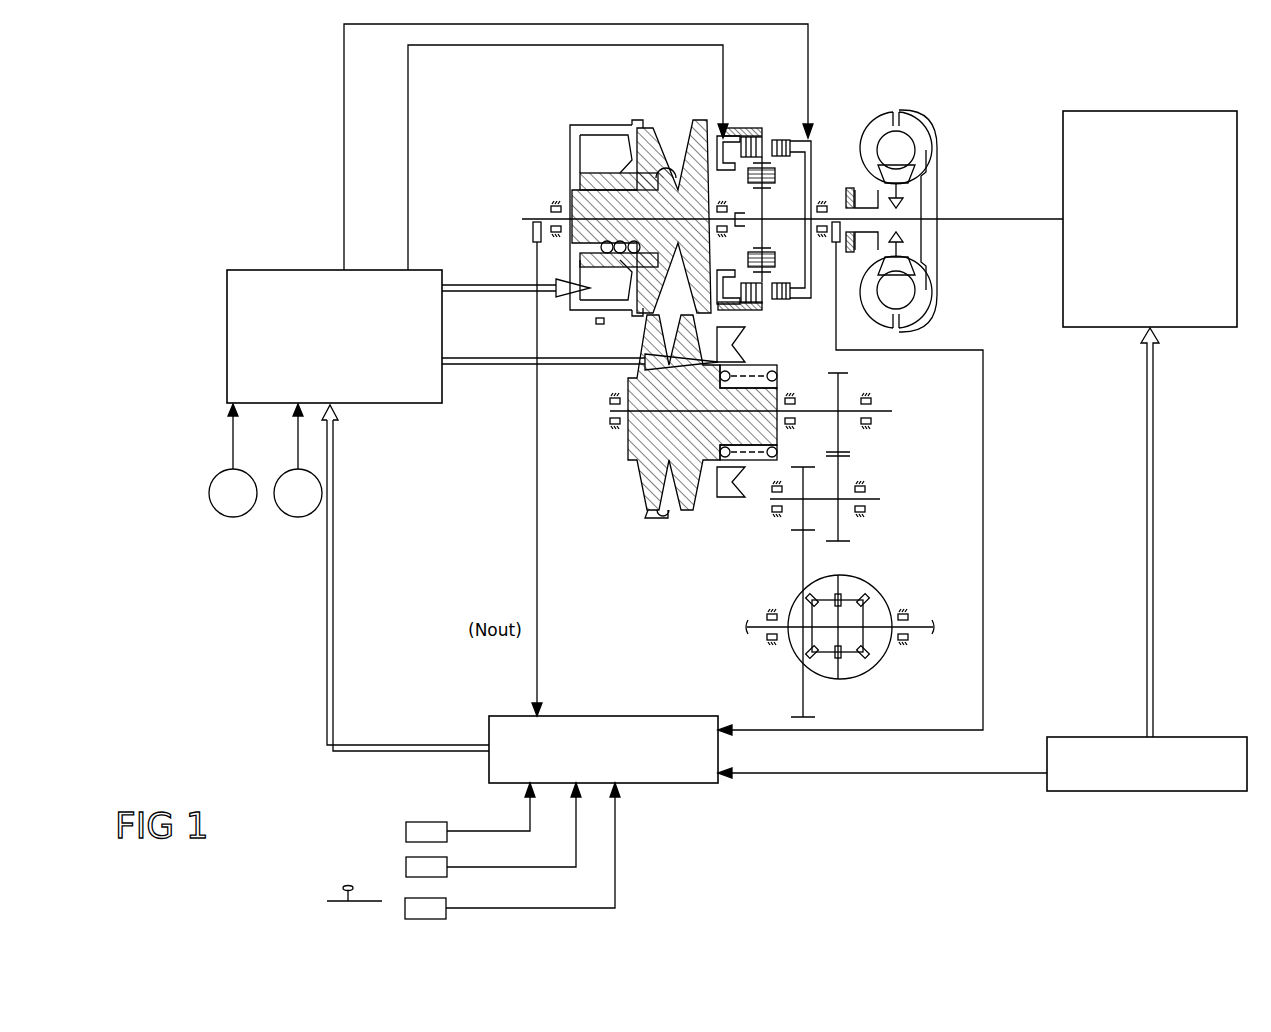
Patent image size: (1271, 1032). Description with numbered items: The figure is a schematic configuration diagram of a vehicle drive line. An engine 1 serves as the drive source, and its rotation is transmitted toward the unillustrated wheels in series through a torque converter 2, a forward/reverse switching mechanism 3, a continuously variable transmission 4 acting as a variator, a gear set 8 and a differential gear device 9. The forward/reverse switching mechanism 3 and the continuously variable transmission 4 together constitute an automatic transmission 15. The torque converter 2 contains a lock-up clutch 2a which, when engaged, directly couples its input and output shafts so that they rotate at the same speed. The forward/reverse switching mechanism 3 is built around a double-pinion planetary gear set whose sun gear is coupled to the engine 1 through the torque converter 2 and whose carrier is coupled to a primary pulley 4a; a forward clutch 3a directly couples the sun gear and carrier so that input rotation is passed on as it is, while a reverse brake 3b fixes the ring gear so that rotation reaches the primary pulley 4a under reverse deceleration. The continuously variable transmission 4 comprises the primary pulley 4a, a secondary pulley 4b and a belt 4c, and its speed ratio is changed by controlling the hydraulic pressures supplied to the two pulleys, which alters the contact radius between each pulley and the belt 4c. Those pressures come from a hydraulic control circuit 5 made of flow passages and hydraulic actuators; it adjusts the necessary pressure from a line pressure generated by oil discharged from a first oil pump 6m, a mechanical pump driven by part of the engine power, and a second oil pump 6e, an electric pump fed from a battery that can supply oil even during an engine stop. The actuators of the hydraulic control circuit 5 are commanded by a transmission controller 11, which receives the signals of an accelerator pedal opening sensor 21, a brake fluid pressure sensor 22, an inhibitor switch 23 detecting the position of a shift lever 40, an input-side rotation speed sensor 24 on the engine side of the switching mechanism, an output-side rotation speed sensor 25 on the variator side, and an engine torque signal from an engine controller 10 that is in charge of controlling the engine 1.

The engine 1 is at (1153, 111).
The torque converter 2 is at (921, 176).
The lock-up clutch 2a is at (938, 192).
The forward/reverse switching mechanism 3 is at (772, 170).
The forward clutch 3a is at (785, 140).
The reverse brake 3b is at (760, 136).
The continuously variable transmission 4 is at (597, 191).
The primary pulley 4a is at (619, 191).
The secondary pulley 4b is at (736, 513).
The belt 4c is at (667, 168).
The hydraulic control circuit 5 is at (258, 270).
The first oil pump 6m is at (233, 519).
The second oil pump 6e is at (298, 519).
The gear set 8 is at (883, 446).
The differential gear device 9 is at (880, 582).
The engine controller 10 is at (1193, 737).
The transmission controller 11 is at (489, 736).
The automatic transmission 15 is at (690, 100).
The accelerator pedal opening sensor 21 is at (406, 832).
The brake fluid pressure sensor 22 is at (406, 867).
The inhibitor switch 23 is at (446, 910).
The input-side rotation speed sensor 24 is at (836, 222).
The output-side rotation speed sensor 25 is at (532, 232).
The shift lever 40 is at (344, 888).